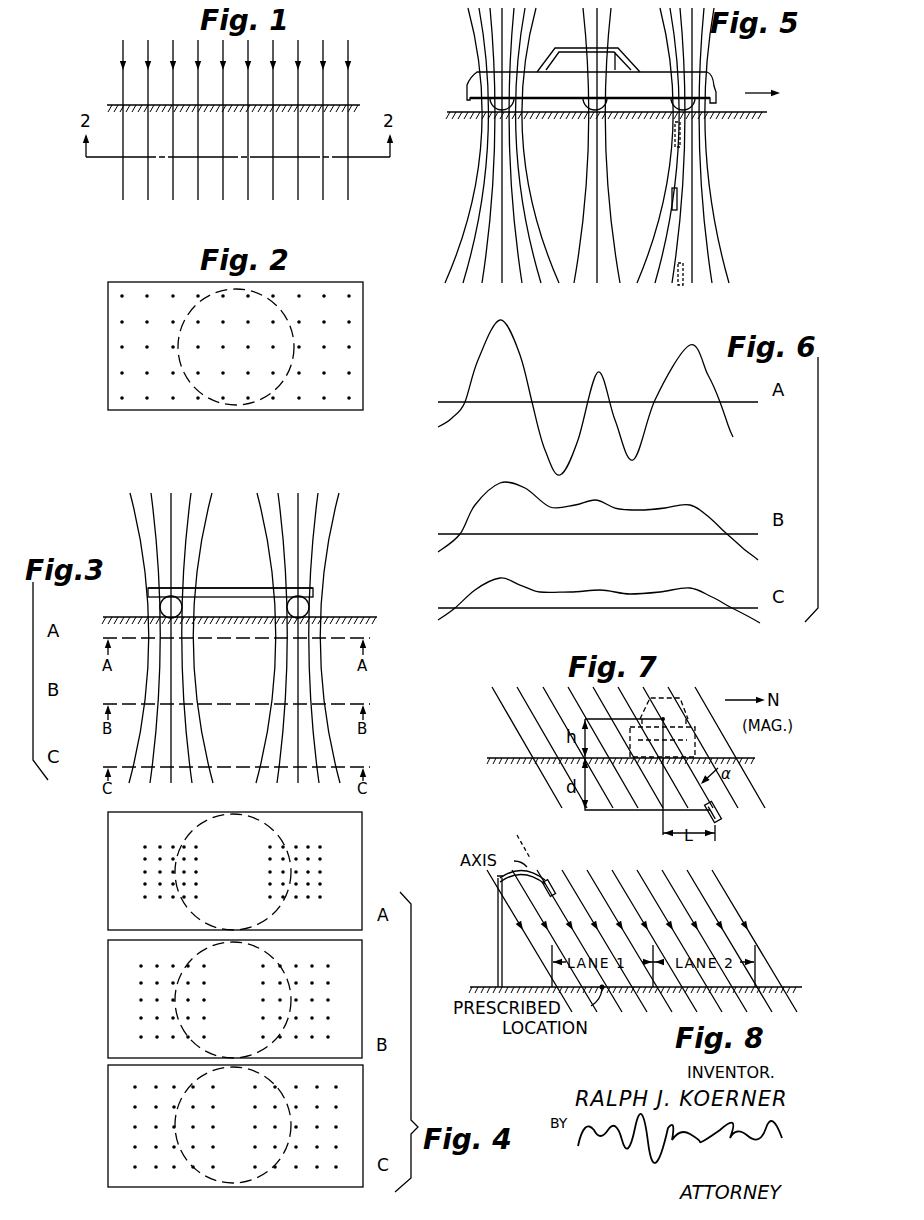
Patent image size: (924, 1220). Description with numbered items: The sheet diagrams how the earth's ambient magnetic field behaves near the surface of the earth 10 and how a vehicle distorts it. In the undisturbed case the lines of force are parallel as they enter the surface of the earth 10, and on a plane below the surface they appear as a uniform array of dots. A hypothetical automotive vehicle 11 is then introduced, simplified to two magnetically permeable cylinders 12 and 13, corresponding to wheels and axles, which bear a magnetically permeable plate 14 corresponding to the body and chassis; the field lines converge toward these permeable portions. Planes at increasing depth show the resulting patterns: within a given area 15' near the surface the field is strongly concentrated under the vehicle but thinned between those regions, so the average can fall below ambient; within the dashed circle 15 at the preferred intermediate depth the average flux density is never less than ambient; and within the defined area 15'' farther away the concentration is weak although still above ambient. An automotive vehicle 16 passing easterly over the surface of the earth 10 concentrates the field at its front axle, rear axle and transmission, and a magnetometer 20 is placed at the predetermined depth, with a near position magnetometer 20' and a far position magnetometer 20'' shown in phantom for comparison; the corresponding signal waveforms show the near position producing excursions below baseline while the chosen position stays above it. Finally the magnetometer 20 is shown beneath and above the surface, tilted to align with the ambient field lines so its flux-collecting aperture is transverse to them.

In FIG. 1, the surface of the earth 10 is at (361, 105).
In FIG. 3, the surface of the earth 10 is at (360, 617).
In FIG. 5, the surface of the earth 10 is at (736, 113).
In FIG. 3, the hypothetical automotive vehicle 11 is at (218, 585).
In FIG. 3, the magnetically permeable cylinder 12 is at (160, 605).
In FIG. 3, the magnetically permeable cylinder 13 is at (310, 606).
In FIG. 3, the magnetically permeable plate 14 is at (237, 588).
In FIG. 4, the dashed circle 15 is at (235, 999).
In FIG. 4, the given area 15' is at (235, 871).
In FIG. 4, the defined area 15'' is at (235, 1126).
In FIG. 5, the automotive vehicle 16 is at (712, 84).
In FIG. 5, the magnetometer 20 is at (712, 197).
In FIG. 7, the magnetometer 20 is at (732, 819).
In FIG. 8, the magnetometer 20 is at (556, 873).
In FIG. 5, the magnetometer in near position 20' is at (716, 135).
In FIG. 5, the magnetometer in far position 20'' is at (720, 269).